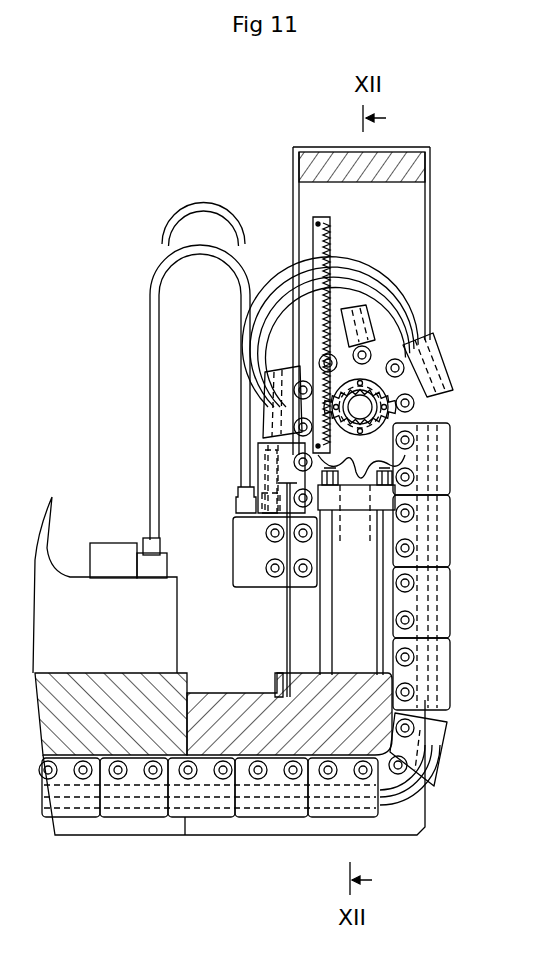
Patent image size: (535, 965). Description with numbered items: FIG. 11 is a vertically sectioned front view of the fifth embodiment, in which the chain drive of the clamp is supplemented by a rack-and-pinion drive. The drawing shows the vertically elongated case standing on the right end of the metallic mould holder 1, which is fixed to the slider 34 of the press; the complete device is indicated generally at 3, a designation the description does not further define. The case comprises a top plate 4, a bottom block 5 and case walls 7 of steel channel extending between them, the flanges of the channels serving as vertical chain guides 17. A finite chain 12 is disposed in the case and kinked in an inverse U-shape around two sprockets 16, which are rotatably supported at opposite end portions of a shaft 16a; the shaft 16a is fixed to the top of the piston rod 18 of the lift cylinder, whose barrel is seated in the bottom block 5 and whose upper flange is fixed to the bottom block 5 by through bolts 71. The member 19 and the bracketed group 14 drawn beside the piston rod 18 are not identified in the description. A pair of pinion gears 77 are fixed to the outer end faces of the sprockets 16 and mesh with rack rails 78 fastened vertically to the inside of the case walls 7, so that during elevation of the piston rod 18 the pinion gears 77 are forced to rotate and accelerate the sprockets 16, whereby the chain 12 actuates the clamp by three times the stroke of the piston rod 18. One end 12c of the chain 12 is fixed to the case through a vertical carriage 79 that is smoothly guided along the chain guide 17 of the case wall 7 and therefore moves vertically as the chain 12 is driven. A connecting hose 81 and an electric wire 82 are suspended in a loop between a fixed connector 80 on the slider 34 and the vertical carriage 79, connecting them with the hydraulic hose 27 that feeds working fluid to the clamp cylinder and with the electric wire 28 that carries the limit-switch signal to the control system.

The metallic mould holder 1 is at (170, 697).
The column unit 3 is at (443, 171).
The top plate 4 is at (405, 163).
The bottom block 5 is at (373, 737).
The case walls 7 is at (428, 230).
The chain 12 is at (458, 533).
The one end of the chain 12c is at (318, 515).
The connecting assembly 14 is at (492, 432).
The sprockets 16 is at (402, 387).
The shaft 16a is at (362, 407).
The chain guides 17 is at (283, 483).
The piston rod 18 is at (368, 463).
The support member 19 is at (360, 528).
The hydraulic hose 27 is at (296, 318).
The electric wire 28 is at (297, 357).
The slider 34 is at (165, 628).
The through bolts 71 is at (330, 604).
The pinion gears 77 is at (385, 343).
The rack rails 78 is at (327, 250).
The vertical carriage 79 is at (272, 583).
The fixed connector 80 is at (113, 545).
The connecting hose 81 is at (152, 295).
The electric wire 82 is at (165, 230).